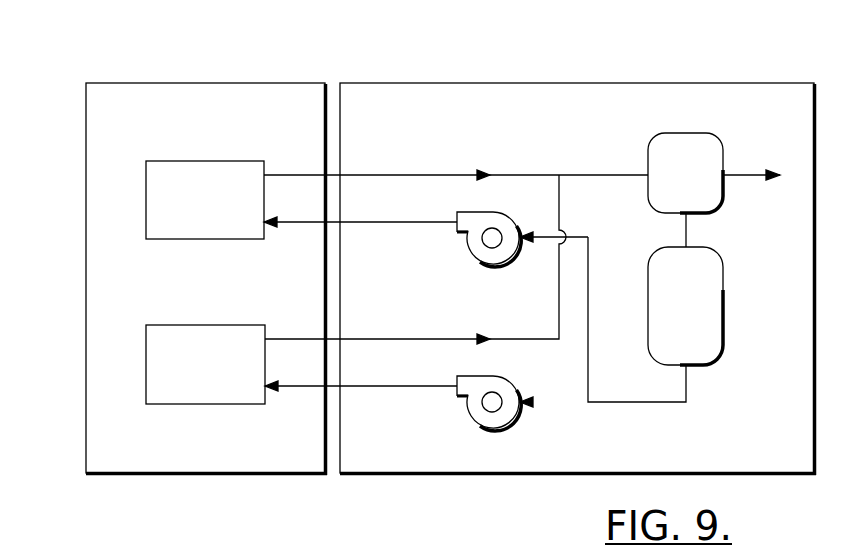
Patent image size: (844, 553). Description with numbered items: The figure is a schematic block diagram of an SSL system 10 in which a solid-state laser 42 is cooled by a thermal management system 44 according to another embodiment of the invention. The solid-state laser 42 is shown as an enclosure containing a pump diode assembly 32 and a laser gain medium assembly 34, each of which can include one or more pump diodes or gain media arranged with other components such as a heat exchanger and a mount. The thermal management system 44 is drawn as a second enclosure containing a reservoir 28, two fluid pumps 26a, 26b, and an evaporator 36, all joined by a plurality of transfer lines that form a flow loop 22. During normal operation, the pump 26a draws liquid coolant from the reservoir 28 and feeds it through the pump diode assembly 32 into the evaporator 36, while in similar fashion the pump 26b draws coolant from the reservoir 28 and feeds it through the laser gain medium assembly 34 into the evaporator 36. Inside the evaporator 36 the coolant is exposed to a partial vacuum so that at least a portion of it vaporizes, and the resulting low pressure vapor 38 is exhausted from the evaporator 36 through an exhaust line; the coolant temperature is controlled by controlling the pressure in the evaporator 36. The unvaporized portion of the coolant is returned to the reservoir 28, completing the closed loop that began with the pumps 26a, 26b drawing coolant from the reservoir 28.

The SSL system 10 is at (461, 45).
The flow loop 22 is at (564, 149).
The pump 26a is at (492, 265).
The pump 26b is at (510, 425).
The reservoir 28 is at (717, 358).
The pump diode assembly 32 is at (210, 160).
The laser gain medium assembly 34 is at (222, 405).
The evaporator 36 is at (707, 132).
The low pressure vapor 38 is at (745, 175).
The solid-state laser 42 is at (85, 142).
The thermal management system 44 is at (643, 80).